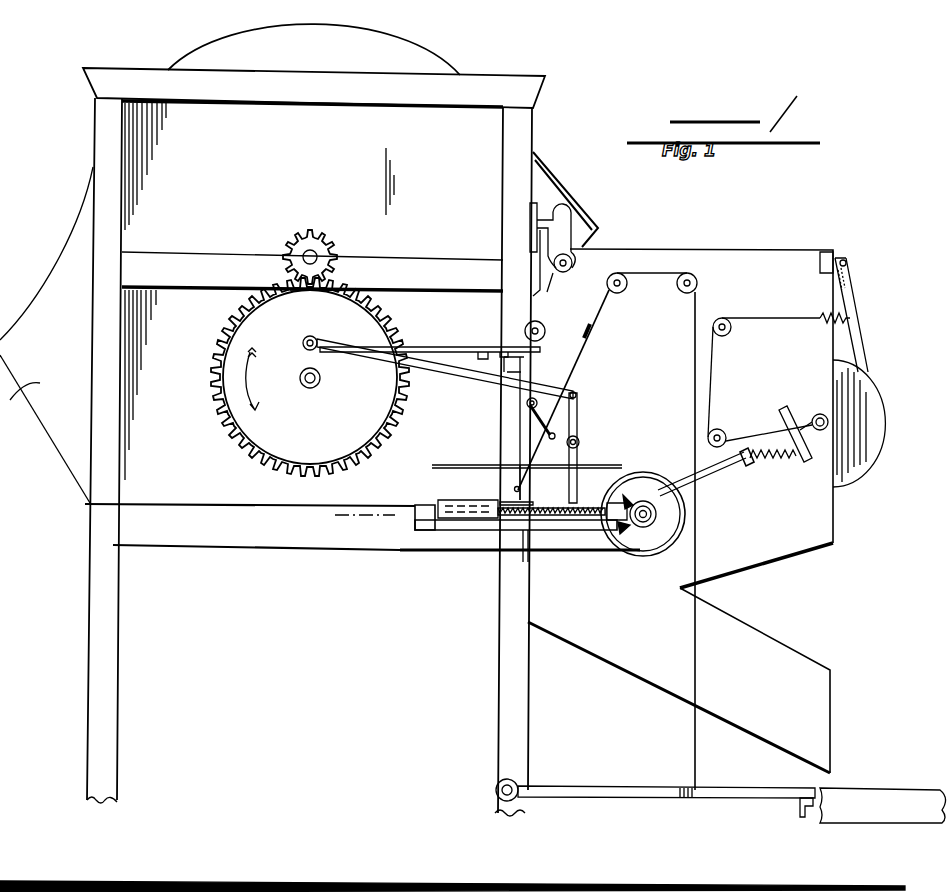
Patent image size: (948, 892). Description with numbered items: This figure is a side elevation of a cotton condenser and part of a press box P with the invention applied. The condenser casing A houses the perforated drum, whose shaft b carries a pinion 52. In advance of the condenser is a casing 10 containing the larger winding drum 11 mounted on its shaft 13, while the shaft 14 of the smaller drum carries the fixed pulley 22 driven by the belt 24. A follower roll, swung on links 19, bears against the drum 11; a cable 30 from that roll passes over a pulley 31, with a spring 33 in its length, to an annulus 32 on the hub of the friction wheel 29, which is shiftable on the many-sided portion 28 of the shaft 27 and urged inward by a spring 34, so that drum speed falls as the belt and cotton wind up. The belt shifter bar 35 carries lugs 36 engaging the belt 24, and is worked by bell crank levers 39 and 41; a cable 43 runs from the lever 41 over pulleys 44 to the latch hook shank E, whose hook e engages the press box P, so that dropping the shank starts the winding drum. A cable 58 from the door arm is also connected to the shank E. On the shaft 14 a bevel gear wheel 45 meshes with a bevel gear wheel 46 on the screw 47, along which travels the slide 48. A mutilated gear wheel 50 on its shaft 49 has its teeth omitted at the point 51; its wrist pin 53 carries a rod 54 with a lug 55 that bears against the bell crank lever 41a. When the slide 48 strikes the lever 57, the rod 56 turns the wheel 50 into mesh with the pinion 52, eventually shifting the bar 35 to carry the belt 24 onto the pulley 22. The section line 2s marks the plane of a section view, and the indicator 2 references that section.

The casing A is at (158, 90).
The mutilated gear wheel 50 is at (225, 417).
The wrist pin 53 is at (303, 346).
The shaft 49 is at (310, 383).
The point 51 is at (310, 290).
The pinion 52 is at (296, 234).
The shaft b is at (320, 250).
The rod 54 is at (437, 345).
The rod 56 is at (413, 374).
The lug 55 is at (483, 347).
The cable 58 is at (582, 376).
The lever 57 is at (582, 410).
The worm or screw 47 is at (582, 512).
The bell crank lever 41a is at (506, 398).
The cable 43 is at (525, 438).
The driving belt 24 is at (428, 467).
The bell crank lever 41 is at (512, 497).
The bell crank lever 39 is at (538, 505).
The slide or traveller 48 is at (426, 548).
The section line 2s is at (365, 530).
The lugs 36 is at (520, 565).
The belt shifter bar 35 is at (533, 524).
The pulley 22 is at (656, 540).
The shaft 14 is at (644, 502).
The bevel gear wheel 45 is at (665, 520).
The bevel gear wheel 46 is at (632, 534).
The casing 10 is at (688, 252).
The pulleys 44 is at (621, 279).
The cable 30 is at (784, 318).
The pulley 31 is at (727, 335).
The spring 34 is at (740, 445).
The spring 33 is at (834, 322).
The links 19 is at (853, 283).
The winding drum or roll 11 is at (878, 430).
The disc 2 is at (878, 394).
The shaft 13 is at (820, 414).
The friction wheel 29 is at (809, 460).
The square or many-sided portion 28 is at (771, 466).
The annulus 32 is at (776, 452).
The shaft 27 is at (743, 478).
The latch hook shank E is at (614, 776).
The press box P is at (899, 790).
The hook e is at (810, 809).